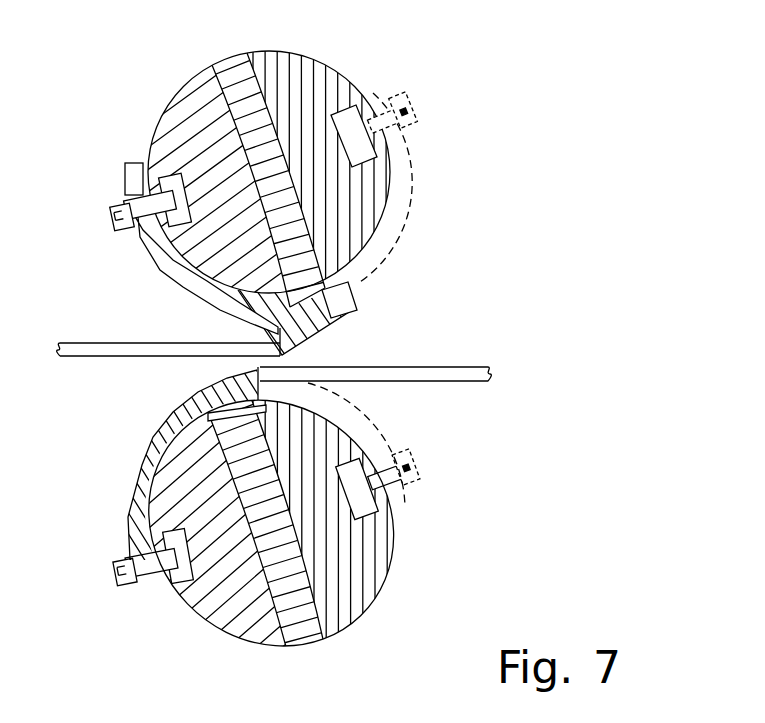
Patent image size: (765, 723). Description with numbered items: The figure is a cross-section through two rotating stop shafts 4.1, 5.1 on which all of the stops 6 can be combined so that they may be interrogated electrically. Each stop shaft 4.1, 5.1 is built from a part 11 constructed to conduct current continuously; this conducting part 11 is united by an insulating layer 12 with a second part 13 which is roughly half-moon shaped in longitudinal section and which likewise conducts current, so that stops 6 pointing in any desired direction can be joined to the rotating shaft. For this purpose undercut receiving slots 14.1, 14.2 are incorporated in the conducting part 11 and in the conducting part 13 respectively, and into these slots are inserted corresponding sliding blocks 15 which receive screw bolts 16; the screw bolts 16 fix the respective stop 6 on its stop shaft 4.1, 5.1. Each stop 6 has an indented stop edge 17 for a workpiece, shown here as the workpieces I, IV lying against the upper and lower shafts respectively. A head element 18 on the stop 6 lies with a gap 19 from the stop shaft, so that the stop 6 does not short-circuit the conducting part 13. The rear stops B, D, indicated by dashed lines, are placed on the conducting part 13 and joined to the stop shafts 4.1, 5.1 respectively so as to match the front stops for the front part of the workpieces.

The stop shaft 4.1 is at (356, 76).
The stop shaft 5.1 is at (397, 569).
The stop 6 is at (124, 170).
The conducting part 11 is at (187, 110).
The insulating layer 12 is at (229, 72).
The second part 13 is at (293, 82).
The undercut receiving slot 14.1 is at (168, 180).
The undercut receiving slot 14.2 is at (367, 148).
The sliding block 15 is at (163, 192).
The screw bolt 16 is at (123, 230).
The indented stop edge 17 is at (276, 332).
The head element 18 is at (345, 311).
The gap 19 is at (323, 289).
The rear stop B is at (412, 196).
The rear stop D is at (407, 497).
The workpiece I is at (93, 350).
The workpiece IV is at (440, 375).